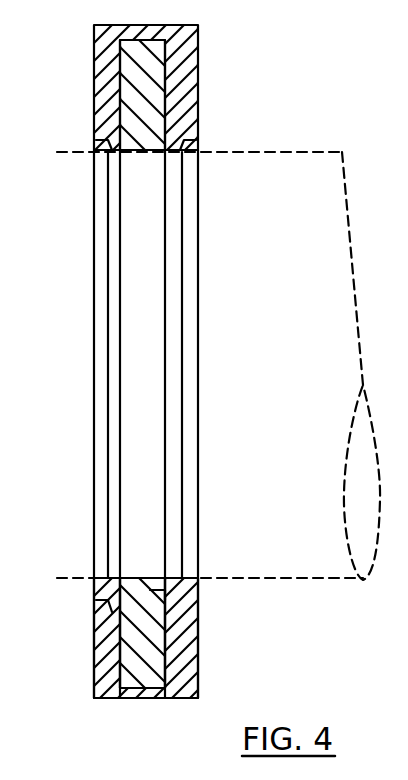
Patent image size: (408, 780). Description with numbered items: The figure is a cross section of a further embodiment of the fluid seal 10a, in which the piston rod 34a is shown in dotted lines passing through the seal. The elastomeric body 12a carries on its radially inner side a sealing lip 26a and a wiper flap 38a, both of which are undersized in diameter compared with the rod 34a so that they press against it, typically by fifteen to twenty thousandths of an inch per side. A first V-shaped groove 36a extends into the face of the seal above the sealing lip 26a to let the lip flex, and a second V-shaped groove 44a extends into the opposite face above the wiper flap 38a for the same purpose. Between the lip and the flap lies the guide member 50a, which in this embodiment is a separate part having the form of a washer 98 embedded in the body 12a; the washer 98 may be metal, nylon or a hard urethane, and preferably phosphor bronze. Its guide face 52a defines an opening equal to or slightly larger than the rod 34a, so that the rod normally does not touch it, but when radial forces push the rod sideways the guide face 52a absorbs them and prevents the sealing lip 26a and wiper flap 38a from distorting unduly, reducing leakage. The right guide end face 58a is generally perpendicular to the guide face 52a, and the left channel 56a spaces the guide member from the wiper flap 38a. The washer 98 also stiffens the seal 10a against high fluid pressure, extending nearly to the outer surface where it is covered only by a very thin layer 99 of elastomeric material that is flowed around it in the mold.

The seal 10a is at (218, 463).
The body 12a is at (93, 703).
The sealing lip 26a is at (195, 140).
The piston rod 34a is at (290, 578).
The first V-shaped groove 36a is at (190, 627).
The wiper flap 38a is at (97, 142).
The second V-shaped groove 44a is at (100, 611).
The guide member 50a is at (157, 605).
The guide face 52a is at (145, 580).
The left channel 56a is at (108, 160).
The right guide end face 58a is at (182, 158).
The washer 98 is at (128, 662).
The thin layer of elastomeric material 99 is at (155, 699).